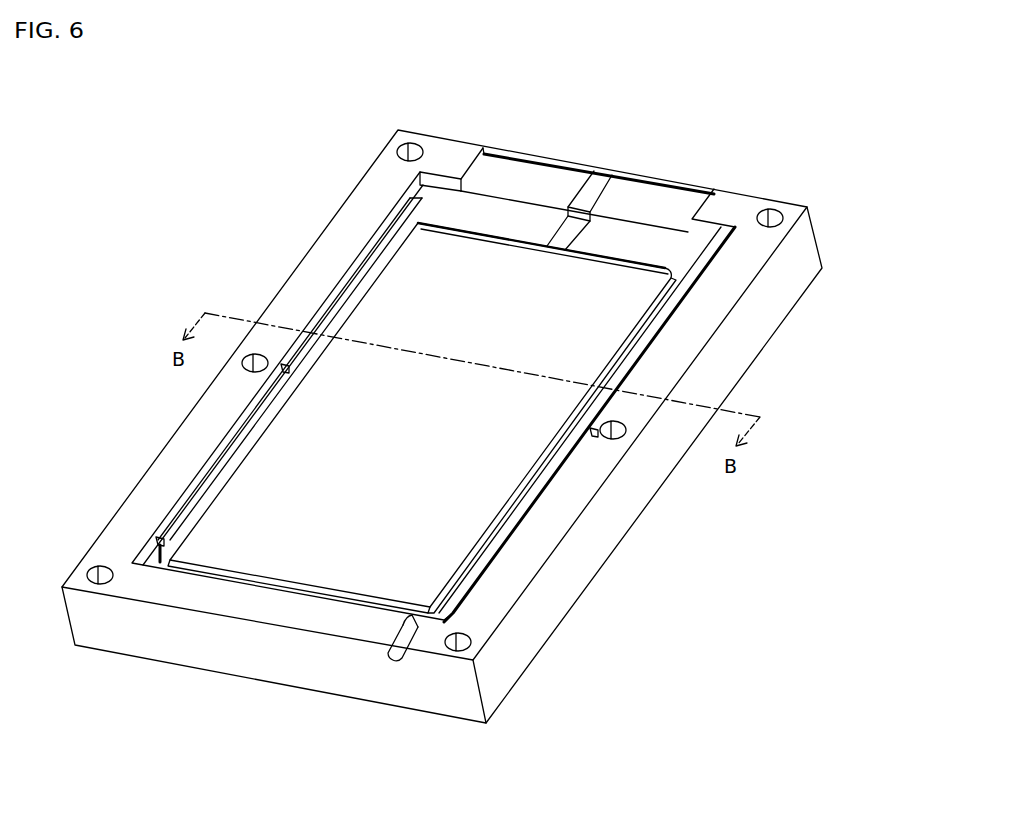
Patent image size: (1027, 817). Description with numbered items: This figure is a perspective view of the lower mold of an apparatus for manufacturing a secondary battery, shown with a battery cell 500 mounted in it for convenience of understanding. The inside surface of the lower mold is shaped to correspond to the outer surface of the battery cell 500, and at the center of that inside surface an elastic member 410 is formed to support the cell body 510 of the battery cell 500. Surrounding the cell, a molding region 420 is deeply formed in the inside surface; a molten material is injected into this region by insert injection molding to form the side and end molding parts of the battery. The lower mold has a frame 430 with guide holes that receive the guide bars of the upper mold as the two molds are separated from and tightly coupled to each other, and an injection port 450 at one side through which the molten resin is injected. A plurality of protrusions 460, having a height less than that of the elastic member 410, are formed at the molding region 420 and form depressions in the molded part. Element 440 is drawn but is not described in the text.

The elastic member 410 is at (493, 560).
The molding region 420 is at (408, 197).
The frame 430 is at (625, 508).
The guide hole 440 is at (775, 212).
The injection port 450 is at (400, 660).
The protrusions 460 is at (347, 290).
The battery cell 500 is at (446, 411).
The cell body 510 is at (612, 326).